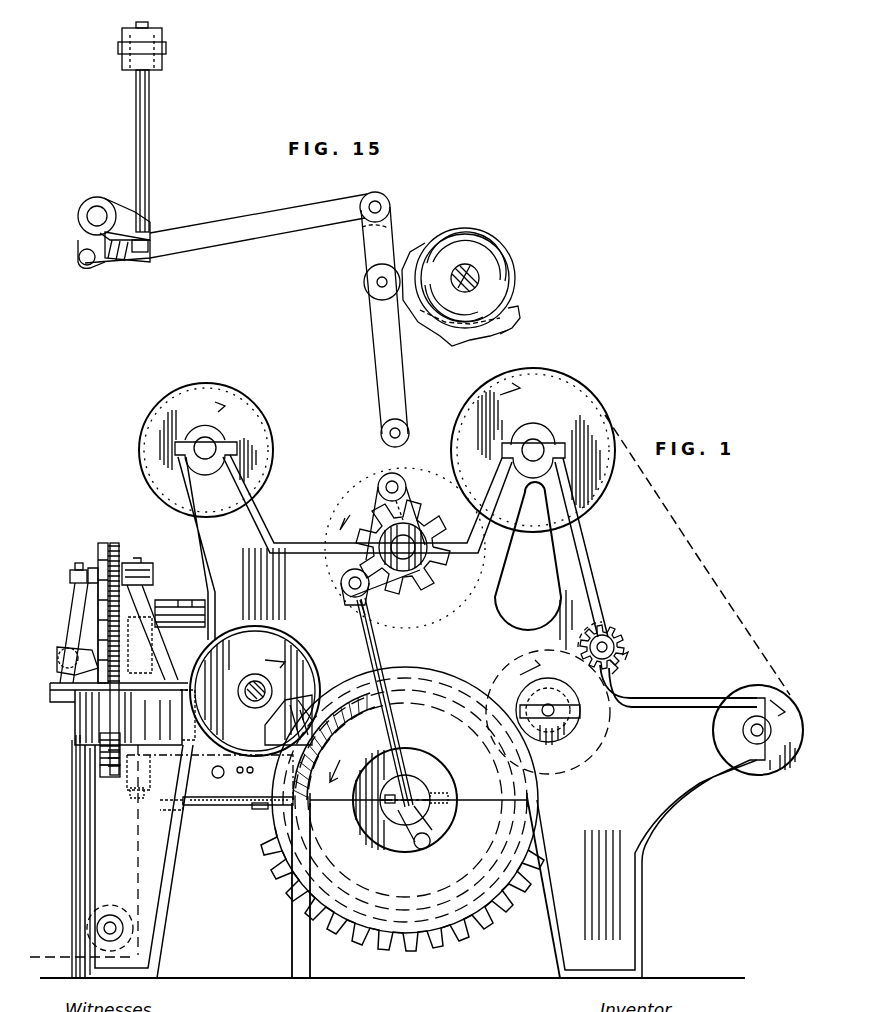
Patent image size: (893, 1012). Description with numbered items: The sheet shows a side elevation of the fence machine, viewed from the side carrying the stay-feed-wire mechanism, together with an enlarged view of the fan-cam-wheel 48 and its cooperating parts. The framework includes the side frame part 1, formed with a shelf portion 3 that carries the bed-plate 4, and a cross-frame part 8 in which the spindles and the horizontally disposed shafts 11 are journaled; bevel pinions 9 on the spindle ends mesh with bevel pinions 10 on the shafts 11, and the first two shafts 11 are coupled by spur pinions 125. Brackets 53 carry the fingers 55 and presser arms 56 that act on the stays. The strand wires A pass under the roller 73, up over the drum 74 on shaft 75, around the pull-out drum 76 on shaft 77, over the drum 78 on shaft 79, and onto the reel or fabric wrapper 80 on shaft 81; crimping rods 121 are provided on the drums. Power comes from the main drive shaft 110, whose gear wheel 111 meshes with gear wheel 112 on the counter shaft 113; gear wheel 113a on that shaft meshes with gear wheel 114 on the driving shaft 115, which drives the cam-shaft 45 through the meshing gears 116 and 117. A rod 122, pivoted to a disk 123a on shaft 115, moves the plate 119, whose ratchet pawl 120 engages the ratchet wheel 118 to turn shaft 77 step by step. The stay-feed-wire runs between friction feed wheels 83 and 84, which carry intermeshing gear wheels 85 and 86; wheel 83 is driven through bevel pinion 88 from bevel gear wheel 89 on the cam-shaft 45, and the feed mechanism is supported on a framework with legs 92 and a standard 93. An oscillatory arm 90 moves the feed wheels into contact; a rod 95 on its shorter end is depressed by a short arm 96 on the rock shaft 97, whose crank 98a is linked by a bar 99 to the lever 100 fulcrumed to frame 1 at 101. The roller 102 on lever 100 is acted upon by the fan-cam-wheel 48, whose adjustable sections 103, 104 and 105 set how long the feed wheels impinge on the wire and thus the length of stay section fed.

In FIG. 1, the side frame part 1 is at (632, 760).
In FIG. 1, the shelf portion 3 is at (165, 668).
In FIG. 1, the bed-plate 4 is at (88, 632).
In FIG. 1, the cross-frame part 8 is at (165, 790).
In FIG. 1, the bevel pinion 9 is at (133, 800).
In FIG. 1, the bevel pinion 10 is at (148, 818).
In FIG. 1, the horizontally disposed shaft 11 is at (205, 812).
In FIG. 15, the cam-shaft 45 is at (475, 272).
In FIG. 1, the cam-shaft 45 is at (255, 685).
In FIG. 15, the fan-shaped cam-wheel 48 is at (478, 278).
In FIG. 1, the fan-shaped cam-wheel 48 is at (248, 720).
In FIG. 1, the bracket 53 is at (198, 598).
In FIG. 1, the finger 55 is at (160, 604).
In FIG. 1, the presser arm 56 is at (265, 745).
In FIG. 1, the roller 73 is at (118, 932).
In FIG. 1, the drum 74 is at (200, 400).
In FIG. 1, the shaft 75 is at (205, 460).
In FIG. 1, the pull-out drum 76 is at (352, 505).
In FIG. 1, the shaft 77 is at (420, 570).
In FIG. 1, the drum 78 is at (533, 450).
In FIG. 1, the shaft 79 is at (535, 452).
In FIG. 1, the reel or fabric wrapper 80 is at (757, 685).
In FIG. 1, the shaft 81 is at (752, 732).
In FIG. 1, the friction feed wheel 83 is at (100, 760).
In FIG. 1, the friction feed wheel 84 is at (98, 548).
In FIG. 1, the gear wheel 85 is at (112, 778).
In FIG. 1, the gear wheel 86 is at (120, 548).
In FIG. 1, the bevel pinion 88 is at (212, 772).
In FIG. 1, the bevel gear wheel 89 is at (320, 640).
In FIG. 15, the oscillatory arm 90 is at (162, 70).
In FIG. 1, the oscillatory arm 90 is at (70, 570).
In FIG. 1, the legs 92 is at (80, 857).
In FIG. 1, the standard 93 is at (52, 705).
In FIG. 15, the rod 95 is at (149, 168).
In FIG. 1, the rod 95 is at (85, 608).
In FIG. 15, the short arm 96 is at (128, 246).
In FIG. 1, the short arm 96 is at (57, 660).
In FIG. 15, the rock shaft 97 is at (90, 210).
In FIG. 15, the crank 98a is at (77, 250).
In FIG. 15, the bar 99 is at (243, 235).
In FIG. 1, the bar 99 is at (178, 700).
In FIG. 15, the lever 100 is at (378, 235).
In FIG. 15, the fulcrum 101 is at (383, 428).
In FIG. 1, the fulcrum 101 is at (225, 810).
In FIG. 15, the roller 102 is at (378, 290).
In FIG. 15, the cam-wheel section 103 is at (500, 332).
In FIG. 15, the cam-wheel section 104 is at (442, 334).
In FIG. 15, the cam-wheel section 105 is at (428, 237).
In FIG. 1, the main drive shaft 110 is at (610, 640).
In FIG. 1, the gear wheel 111 is at (615, 668).
In FIG. 1, the gear wheel 112 is at (610, 730).
In FIG. 1, the counter shaft 113 is at (548, 708).
In FIG. 1, the gear wheel 113a is at (552, 740).
In FIG. 1, the gear wheel 114 is at (478, 928).
In FIG. 1, the driving shaft 115 is at (395, 822).
In FIG. 1, the gear 116 is at (375, 710).
In FIG. 1, the gear 117 is at (324, 628).
In FIG. 1, the ratchet wheel 118 is at (440, 520).
In FIG. 1, the plate 119 is at (385, 572).
In FIG. 1, the ratchet pawl 120 is at (388, 476).
In FIG. 1, the rods 121 is at (415, 465).
In FIG. 1, the rod 122 is at (378, 652).
In FIG. 1, the disk 123a is at (433, 773).
In FIG. 1, the spur pinion 125 is at (262, 815).
In FIG. 1, the strand wires A is at (82, 943).